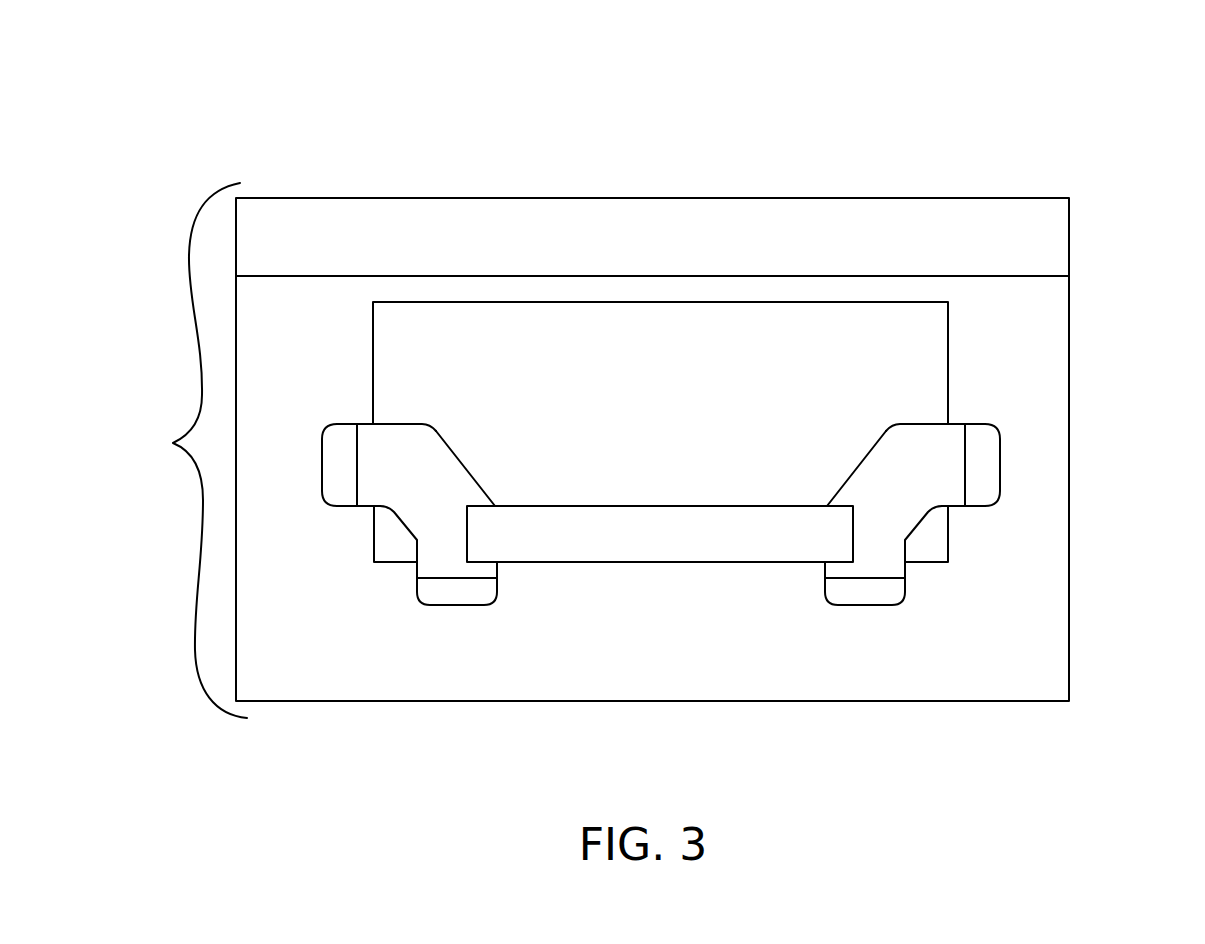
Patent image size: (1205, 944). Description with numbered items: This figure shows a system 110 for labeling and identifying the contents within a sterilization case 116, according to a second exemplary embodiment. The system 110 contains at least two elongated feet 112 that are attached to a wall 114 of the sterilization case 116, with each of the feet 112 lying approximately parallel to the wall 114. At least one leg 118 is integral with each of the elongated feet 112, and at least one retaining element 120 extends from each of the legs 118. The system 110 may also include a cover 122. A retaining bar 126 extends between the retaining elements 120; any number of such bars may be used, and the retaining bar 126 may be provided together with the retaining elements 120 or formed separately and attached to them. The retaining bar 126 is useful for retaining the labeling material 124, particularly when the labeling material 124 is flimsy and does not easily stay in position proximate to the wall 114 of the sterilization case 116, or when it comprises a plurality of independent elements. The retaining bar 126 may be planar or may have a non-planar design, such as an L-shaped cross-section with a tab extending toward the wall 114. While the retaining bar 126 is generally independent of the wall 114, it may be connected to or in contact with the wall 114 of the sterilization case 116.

The system 110 is at (639, 405).
The elongated feet 112 is at (337, 483).
The wall 114 is at (1070, 502).
The sterilization case 116 is at (185, 450).
The leg 118 is at (378, 433).
The retaining element 120 is at (465, 468).
The cover 122 is at (847, 213).
The labeling material 124 is at (953, 337).
The retaining bar 126 is at (672, 550).